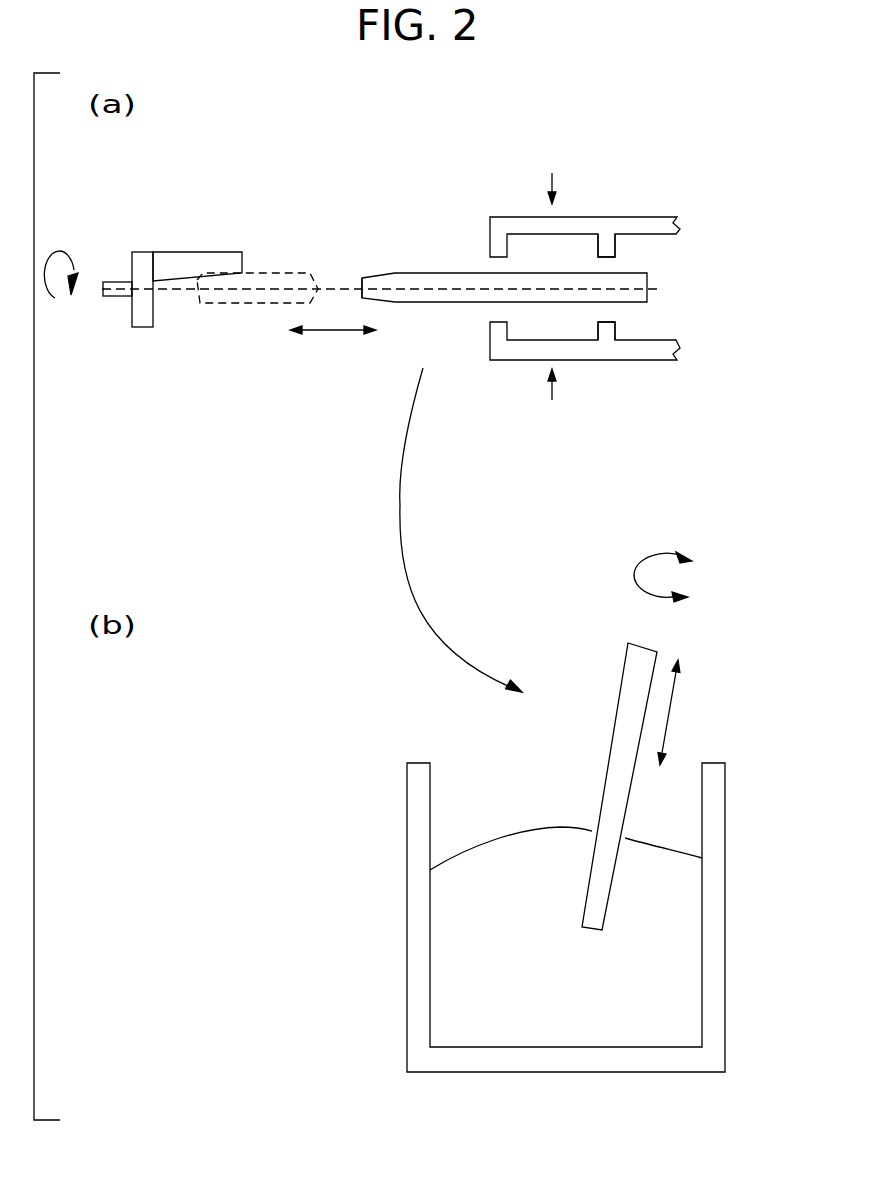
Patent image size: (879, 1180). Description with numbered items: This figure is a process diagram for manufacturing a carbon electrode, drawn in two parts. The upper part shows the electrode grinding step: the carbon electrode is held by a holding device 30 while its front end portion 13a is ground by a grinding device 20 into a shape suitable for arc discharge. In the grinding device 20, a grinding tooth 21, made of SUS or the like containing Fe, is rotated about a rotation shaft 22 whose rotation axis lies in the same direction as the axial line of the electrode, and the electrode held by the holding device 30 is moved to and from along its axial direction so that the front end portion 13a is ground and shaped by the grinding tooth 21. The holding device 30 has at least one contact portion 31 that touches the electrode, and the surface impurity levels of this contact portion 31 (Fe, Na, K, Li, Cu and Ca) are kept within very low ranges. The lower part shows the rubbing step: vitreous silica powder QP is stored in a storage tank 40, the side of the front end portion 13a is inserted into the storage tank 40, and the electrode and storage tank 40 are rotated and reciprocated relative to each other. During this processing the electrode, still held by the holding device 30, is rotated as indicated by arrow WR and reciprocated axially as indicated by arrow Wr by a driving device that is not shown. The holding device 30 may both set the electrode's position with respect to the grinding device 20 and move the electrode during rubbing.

The front end portion 13a is at (359, 288).
The grinding device 20 is at (172, 350).
The grinding tooth 21 is at (183, 281).
The rotation shaft 22 is at (117, 297).
The holding device 30 is at (462, 208).
The contact portion 31 is at (605, 257).
The storage tank 40 is at (407, 847).
The vitreous silica powder QP is at (475, 850).
The arrow indicating rotation WR is at (655, 565).
The arrow indicating reciprocation Wr is at (679, 712).